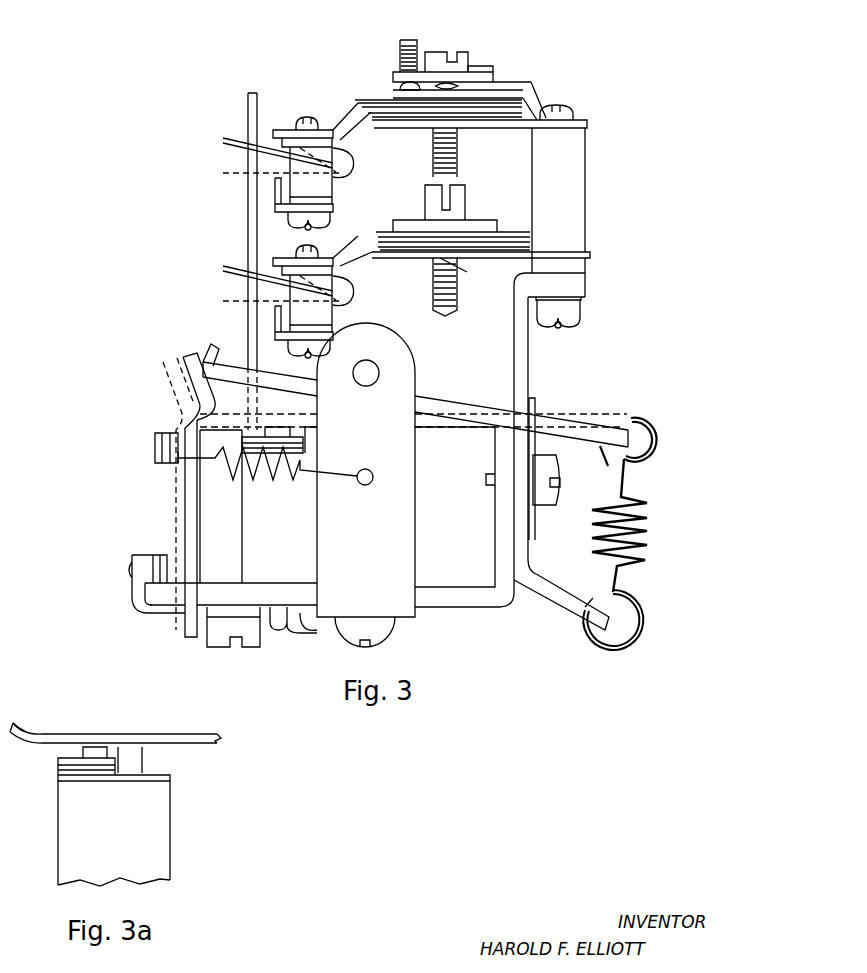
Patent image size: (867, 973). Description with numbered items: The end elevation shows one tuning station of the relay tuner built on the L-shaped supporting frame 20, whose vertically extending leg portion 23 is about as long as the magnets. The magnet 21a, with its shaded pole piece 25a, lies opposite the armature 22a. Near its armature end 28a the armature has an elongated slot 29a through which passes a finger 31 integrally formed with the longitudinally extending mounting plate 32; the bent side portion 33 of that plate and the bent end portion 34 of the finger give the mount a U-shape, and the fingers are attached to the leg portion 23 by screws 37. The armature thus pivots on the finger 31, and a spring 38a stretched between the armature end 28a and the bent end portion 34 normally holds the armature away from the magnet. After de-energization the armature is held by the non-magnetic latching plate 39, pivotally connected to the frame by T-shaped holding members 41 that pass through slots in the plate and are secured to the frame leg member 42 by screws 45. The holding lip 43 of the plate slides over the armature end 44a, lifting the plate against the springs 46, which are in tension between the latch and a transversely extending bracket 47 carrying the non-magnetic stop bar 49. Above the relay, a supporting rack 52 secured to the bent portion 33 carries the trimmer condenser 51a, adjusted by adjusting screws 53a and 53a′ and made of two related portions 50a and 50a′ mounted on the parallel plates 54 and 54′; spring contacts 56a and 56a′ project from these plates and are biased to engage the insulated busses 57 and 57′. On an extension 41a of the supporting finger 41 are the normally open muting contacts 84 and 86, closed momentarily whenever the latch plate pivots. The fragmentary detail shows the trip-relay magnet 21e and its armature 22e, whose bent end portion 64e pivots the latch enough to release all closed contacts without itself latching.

In FIG. 3, the supporting frame 20 is at (465, 606).
In FIG. 3, the magnet 21a is at (252, 551).
In FIG. 3, the armature 22a is at (421, 406).
In FIG. 3, the leg portion 23 is at (497, 518).
In FIG. 3, the pole piece 25a is at (277, 432).
In FIG. 3, the armature end 28a is at (600, 420).
In FIG. 3, the elongated aperture or slot 29a is at (533, 404).
In FIG. 3, the finger 31 is at (520, 546).
In FIG. 3, the mounting plate 32 is at (522, 356).
In FIG. 3, the bent side portion 33 is at (582, 281).
In FIG. 3, the bent end portion 34 is at (563, 604).
In FIG. 3, the screws 37 is at (548, 468).
In FIG. 3, the spring 38a is at (636, 508).
In FIG. 3, the latching plate 39 is at (185, 418).
In FIG. 3, the T-shaped holding member 41 is at (158, 609).
In FIG. 3, the extension 41a is at (132, 599).
In FIG. 3, the frame leg member 42 is at (228, 597).
In FIG. 3, the holding lip 43 is at (197, 388).
In FIG. 3, the armature end 44a is at (215, 372).
In FIG. 3, the screws 45 is at (248, 640).
In FIG. 3, the springs 46 is at (279, 483).
In FIG. 3, the bracket 47 is at (406, 492).
In FIG. 3, the non-magnetic bar 49 is at (372, 372).
In FIG. 3, the condenser portion 50a is at (488, 96).
In FIG. 3, the condenser portion 50a′ is at (472, 226).
In FIG. 3, the trimmer condenser 51a is at (490, 70).
In FIG. 3, the supporting rack 52 is at (570, 171).
In FIG. 3, the adjusting screw 53a is at (458, 56).
In FIG. 3, the adjusting screw 53a′ is at (462, 188).
In FIG. 3, the plate 54 is at (585, 126).
In FIG. 3, the plate 54′ is at (595, 256).
In FIG. 3, the spring contact 56a is at (223, 140).
In FIG. 3, the spring contact 56a′ is at (223, 268).
In FIG. 3, the bus 57 is at (275, 196).
In FIG. 3, the bus 57′ is at (275, 324).
In FIG. 3, the bent end portion 64e is at (242, 365).
In FIG. 3A, the bent end portion 64e is at (40, 730).
In FIG. 3, the muting contact 84 is at (157, 456).
In FIG. 3, the muting contact 86 is at (178, 462).
In FIG. 3A, the magnet 21e is at (150, 815).
In FIG. 3A, the armature 22e is at (133, 740).